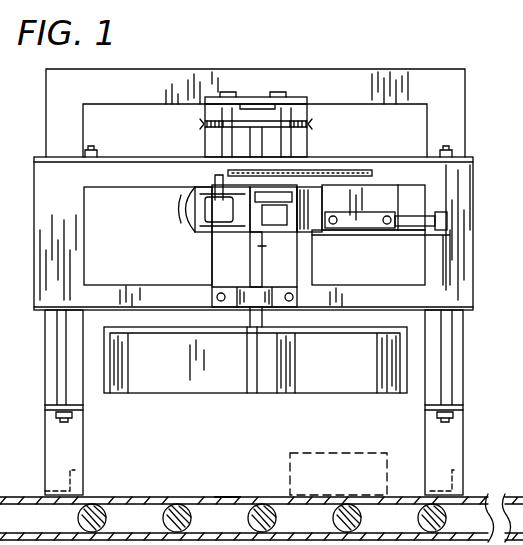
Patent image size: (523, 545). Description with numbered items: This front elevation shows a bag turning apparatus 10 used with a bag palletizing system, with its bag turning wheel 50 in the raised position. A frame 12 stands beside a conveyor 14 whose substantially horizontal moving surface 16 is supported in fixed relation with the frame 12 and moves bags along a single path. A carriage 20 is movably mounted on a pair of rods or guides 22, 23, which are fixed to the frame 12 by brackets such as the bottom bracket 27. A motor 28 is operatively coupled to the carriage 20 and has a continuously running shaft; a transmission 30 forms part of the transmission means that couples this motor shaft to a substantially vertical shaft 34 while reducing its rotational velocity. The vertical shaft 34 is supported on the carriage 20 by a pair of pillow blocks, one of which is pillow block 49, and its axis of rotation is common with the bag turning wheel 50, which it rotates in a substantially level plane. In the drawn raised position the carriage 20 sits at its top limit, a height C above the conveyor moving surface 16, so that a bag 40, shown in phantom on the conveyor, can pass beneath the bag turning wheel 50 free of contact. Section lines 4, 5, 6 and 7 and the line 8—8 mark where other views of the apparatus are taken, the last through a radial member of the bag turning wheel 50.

The bag turning apparatus 10 is at (442, 30).
The frame 12 is at (452, 98).
The upper drive assembly 5 is at (200, 80).
The section line 6 is at (200, 113).
The section line 4 is at (205, 164).
The section line 7 is at (143, 319).
The section line 8— 8 is at (140, 358).
The carriage 20 is at (472, 190).
The motor 28 is at (180, 226).
The transmission 30 is at (383, 231).
The vertical shaft 34 is at (274, 246).
The pillow block 49 is at (262, 288).
The guide 23 is at (62, 366).
The guide 22 is at (445, 338).
The bottom bracket 27 is at (465, 422).
The bag turning wheel 50 is at (348, 394).
The height C is at (156, 394).
The bag 40 is at (343, 483).
The conveyor 14 is at (226, 528).
The conveyor moving surface 16 is at (222, 497).